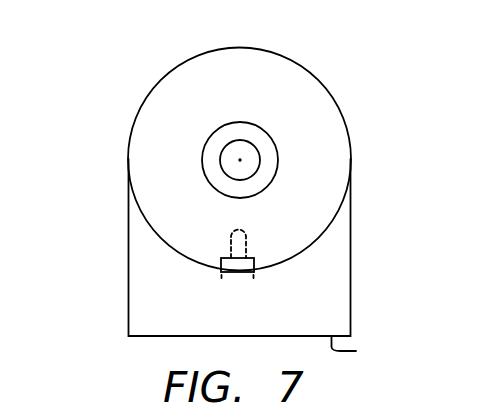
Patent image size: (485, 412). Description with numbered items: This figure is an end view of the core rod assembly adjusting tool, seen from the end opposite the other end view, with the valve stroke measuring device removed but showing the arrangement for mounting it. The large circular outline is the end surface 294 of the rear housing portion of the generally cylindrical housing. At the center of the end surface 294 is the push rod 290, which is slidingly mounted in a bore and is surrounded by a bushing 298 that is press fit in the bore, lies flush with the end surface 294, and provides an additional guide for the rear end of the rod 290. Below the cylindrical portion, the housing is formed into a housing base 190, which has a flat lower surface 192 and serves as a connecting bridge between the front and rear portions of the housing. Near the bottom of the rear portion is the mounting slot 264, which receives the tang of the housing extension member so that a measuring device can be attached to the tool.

The housing base 190 is at (331, 306).
The flat lower surface 192 is at (361, 347).
The mounting slot 264 is at (232, 267).
The push rod 290 is at (238, 149).
The end surface 294 is at (163, 107).
The bushing 298 is at (268, 147).